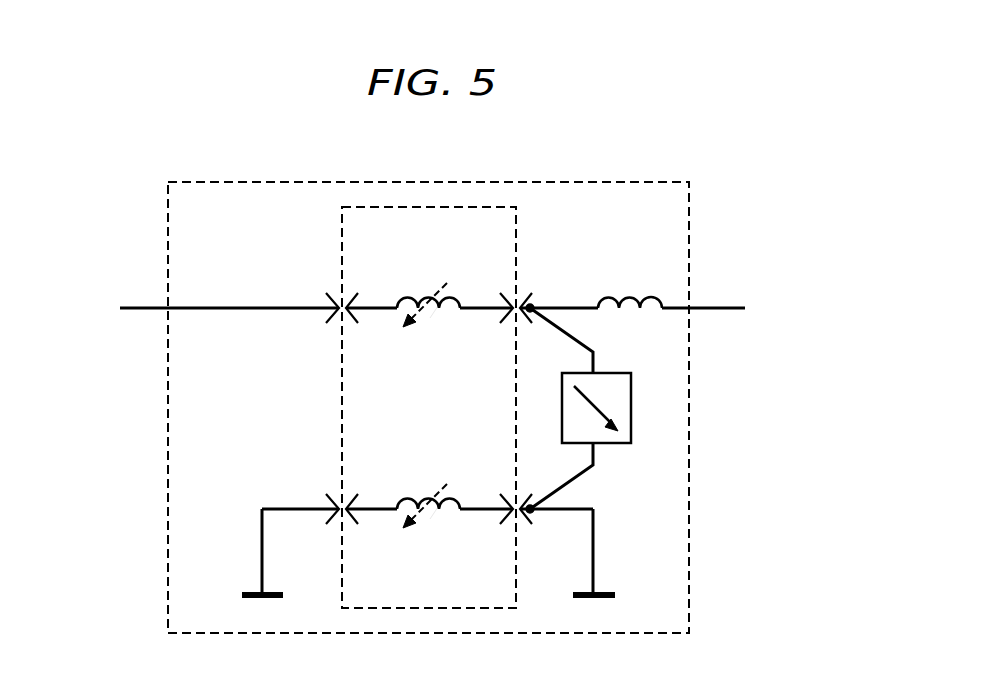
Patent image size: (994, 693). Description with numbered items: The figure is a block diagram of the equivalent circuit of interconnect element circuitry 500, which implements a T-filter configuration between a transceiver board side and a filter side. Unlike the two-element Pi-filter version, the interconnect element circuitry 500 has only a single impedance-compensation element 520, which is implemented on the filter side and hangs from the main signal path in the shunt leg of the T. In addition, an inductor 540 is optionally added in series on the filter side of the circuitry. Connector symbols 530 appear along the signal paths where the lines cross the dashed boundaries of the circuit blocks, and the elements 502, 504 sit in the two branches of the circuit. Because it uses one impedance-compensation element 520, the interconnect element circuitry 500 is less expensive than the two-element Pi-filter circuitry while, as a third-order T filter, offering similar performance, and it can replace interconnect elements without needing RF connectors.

The interconnect element circuitry 500 is at (447, 140).
The variable inductor 502 is at (455, 292).
The variable inductor 504 is at (455, 493).
The impedance-compensation element 520 is at (613, 373).
The connector 530 is at (336, 298).
The inductor 540 is at (632, 295).